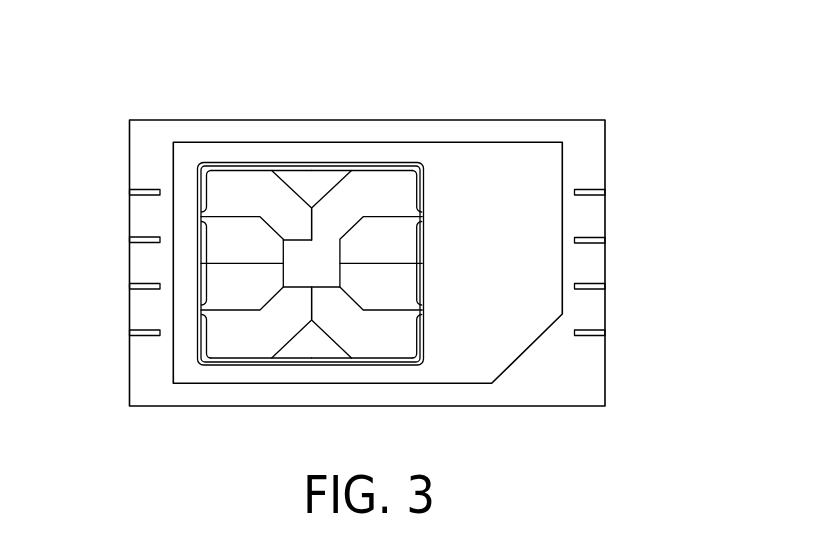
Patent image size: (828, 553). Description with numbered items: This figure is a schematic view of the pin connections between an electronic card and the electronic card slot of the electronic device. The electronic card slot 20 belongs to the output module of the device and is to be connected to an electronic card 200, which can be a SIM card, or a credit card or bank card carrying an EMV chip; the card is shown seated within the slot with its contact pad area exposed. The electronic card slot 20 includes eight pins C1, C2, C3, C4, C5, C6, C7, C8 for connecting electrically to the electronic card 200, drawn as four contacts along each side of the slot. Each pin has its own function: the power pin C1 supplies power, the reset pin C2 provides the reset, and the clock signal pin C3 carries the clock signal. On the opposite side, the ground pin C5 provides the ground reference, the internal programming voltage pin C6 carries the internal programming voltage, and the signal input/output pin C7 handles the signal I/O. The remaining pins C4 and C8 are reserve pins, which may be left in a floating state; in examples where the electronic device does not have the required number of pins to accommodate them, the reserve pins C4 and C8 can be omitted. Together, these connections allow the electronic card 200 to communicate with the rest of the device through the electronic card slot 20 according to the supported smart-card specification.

The electronic card slot 20 is at (575, 120).
The electronic card 200 is at (443, 160).
The power pin C1 is at (142, 190).
The reset pin C2 is at (142, 237).
The clock signal pin C3 is at (142, 284).
The reserve pin C4 is at (142, 330).
The ground pin C5 is at (585, 190).
The internal programming voltage pin C6 is at (585, 238).
The signal input/output pin C7 is at (585, 284).
The reserve pin C8 is at (585, 330).